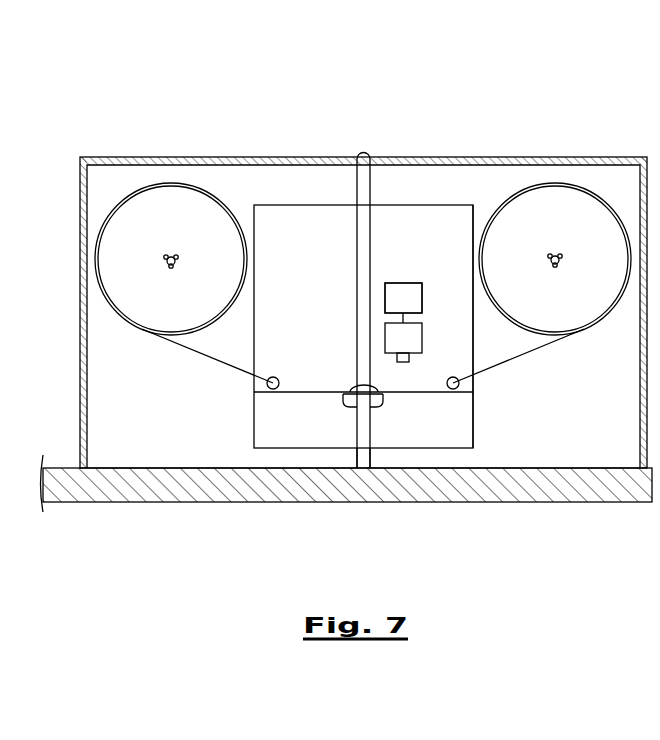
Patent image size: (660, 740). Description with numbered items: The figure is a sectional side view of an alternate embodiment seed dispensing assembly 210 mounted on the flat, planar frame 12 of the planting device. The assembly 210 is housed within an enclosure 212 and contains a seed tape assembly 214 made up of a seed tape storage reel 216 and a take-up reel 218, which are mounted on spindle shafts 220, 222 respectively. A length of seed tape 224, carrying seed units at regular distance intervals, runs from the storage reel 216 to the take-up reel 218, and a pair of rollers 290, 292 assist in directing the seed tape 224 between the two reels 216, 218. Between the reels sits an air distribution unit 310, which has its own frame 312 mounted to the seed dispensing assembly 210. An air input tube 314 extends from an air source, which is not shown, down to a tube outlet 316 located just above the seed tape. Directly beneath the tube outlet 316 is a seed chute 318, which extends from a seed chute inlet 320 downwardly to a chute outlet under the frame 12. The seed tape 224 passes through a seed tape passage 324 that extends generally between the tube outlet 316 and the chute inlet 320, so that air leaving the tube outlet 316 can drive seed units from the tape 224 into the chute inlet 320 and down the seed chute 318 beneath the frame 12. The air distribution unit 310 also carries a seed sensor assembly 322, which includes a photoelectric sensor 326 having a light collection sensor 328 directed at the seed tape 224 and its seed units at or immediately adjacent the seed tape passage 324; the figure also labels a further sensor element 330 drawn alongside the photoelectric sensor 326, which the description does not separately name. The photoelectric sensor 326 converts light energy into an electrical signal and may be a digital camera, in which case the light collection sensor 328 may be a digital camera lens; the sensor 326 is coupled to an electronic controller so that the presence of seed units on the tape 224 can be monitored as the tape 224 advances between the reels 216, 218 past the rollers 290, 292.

The frame 12 is at (513, 494).
The seed dispensing assembly 210 is at (358, 116).
The enclosure 212 is at (510, 160).
The seed tape assembly 214 is at (543, 398).
The seed tape storage reel 216 is at (598, 189).
The take-up reel 218 is at (150, 187).
The spindle shaft 220 is at (555, 253).
The spindle shaft 222 is at (170, 254).
The seed tape 224 is at (184, 352).
The roller 290 is at (458, 378).
The roller 292 is at (268, 378).
The air distribution unit 310 is at (254, 427).
The frame 312 is at (474, 428).
The air input tube 314 is at (364, 181).
The tube outlet 316 is at (355, 389).
The seed chute 318 is at (357, 459).
The seed chute inlet 320 is at (374, 402).
The seed sensor assembly 322 is at (403, 277).
The seed tape passage 324 is at (338, 395).
The photoelectric sensor 326 is at (418, 325).
The light collection sensor 328 is at (408, 361).
The controller 330 is at (411, 289).